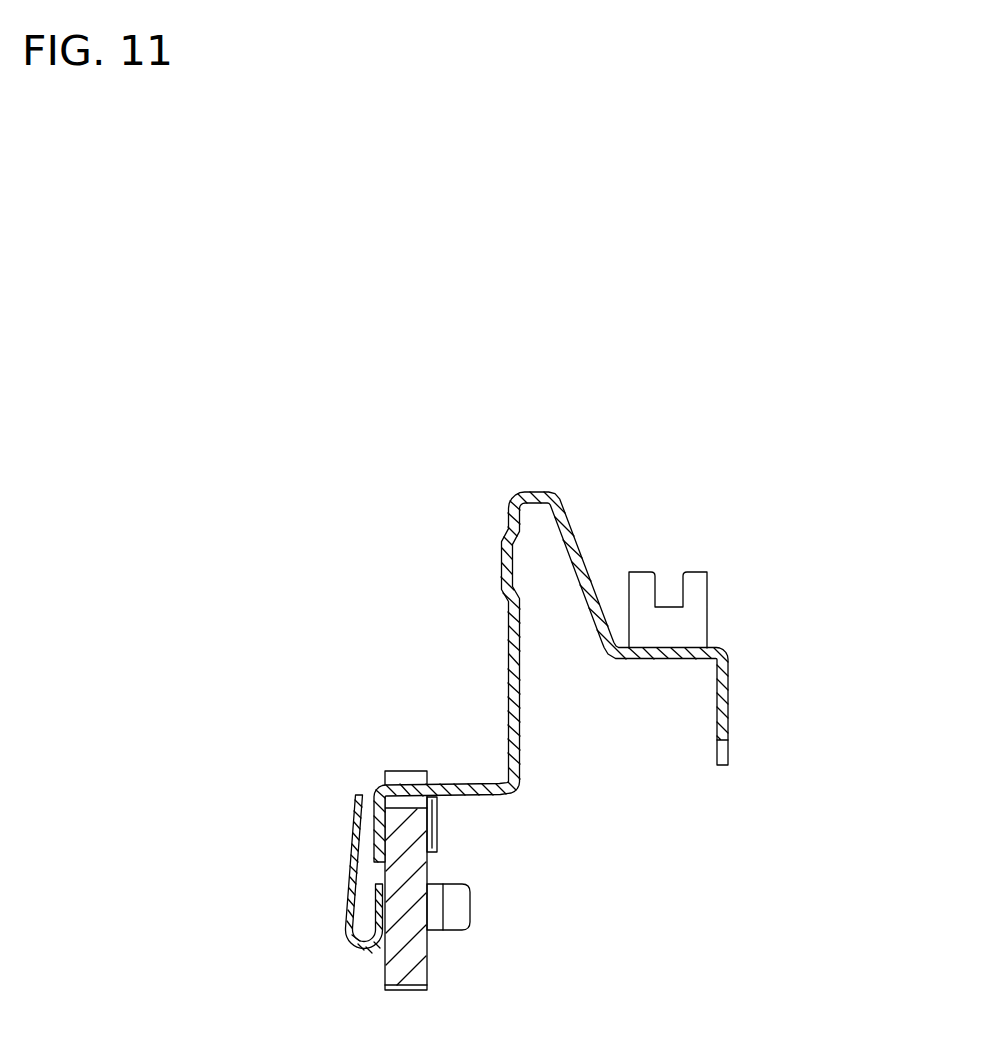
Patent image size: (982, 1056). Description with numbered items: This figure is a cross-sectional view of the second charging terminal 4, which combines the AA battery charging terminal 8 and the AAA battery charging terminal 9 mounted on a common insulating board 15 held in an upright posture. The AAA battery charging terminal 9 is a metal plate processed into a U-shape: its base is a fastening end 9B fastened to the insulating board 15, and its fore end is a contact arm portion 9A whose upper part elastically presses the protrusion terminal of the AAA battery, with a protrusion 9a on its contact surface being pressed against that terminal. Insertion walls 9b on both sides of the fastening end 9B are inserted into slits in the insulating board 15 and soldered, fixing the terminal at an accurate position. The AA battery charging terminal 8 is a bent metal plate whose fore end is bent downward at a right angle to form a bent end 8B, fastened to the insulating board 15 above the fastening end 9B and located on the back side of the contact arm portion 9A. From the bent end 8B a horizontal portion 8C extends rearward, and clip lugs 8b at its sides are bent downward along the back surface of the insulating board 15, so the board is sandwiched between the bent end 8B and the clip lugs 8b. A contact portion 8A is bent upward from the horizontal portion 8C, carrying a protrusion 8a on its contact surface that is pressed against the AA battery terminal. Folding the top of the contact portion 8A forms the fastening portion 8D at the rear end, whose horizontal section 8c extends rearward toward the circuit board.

The second charging terminal 4 is at (345, 592).
The AA battery charging terminal 8 is at (457, 677).
The contact portion 8A is at (469, 510).
The protrusion 8a is at (502, 563).
The bent end 8B is at (376, 815).
The clip lugs 8b is at (432, 828).
The horizontal portion 8C is at (473, 792).
The horizontal section 8c is at (670, 648).
The fastening portion 8D is at (774, 632).
The AAA battery charging terminal 9 is at (325, 838).
The contact arm portion 9A is at (350, 872).
The protrusion 9a is at (350, 823).
The fastening end 9B is at (363, 953).
The insertion walls 9b is at (437, 915).
The insulating board 15 is at (407, 968).